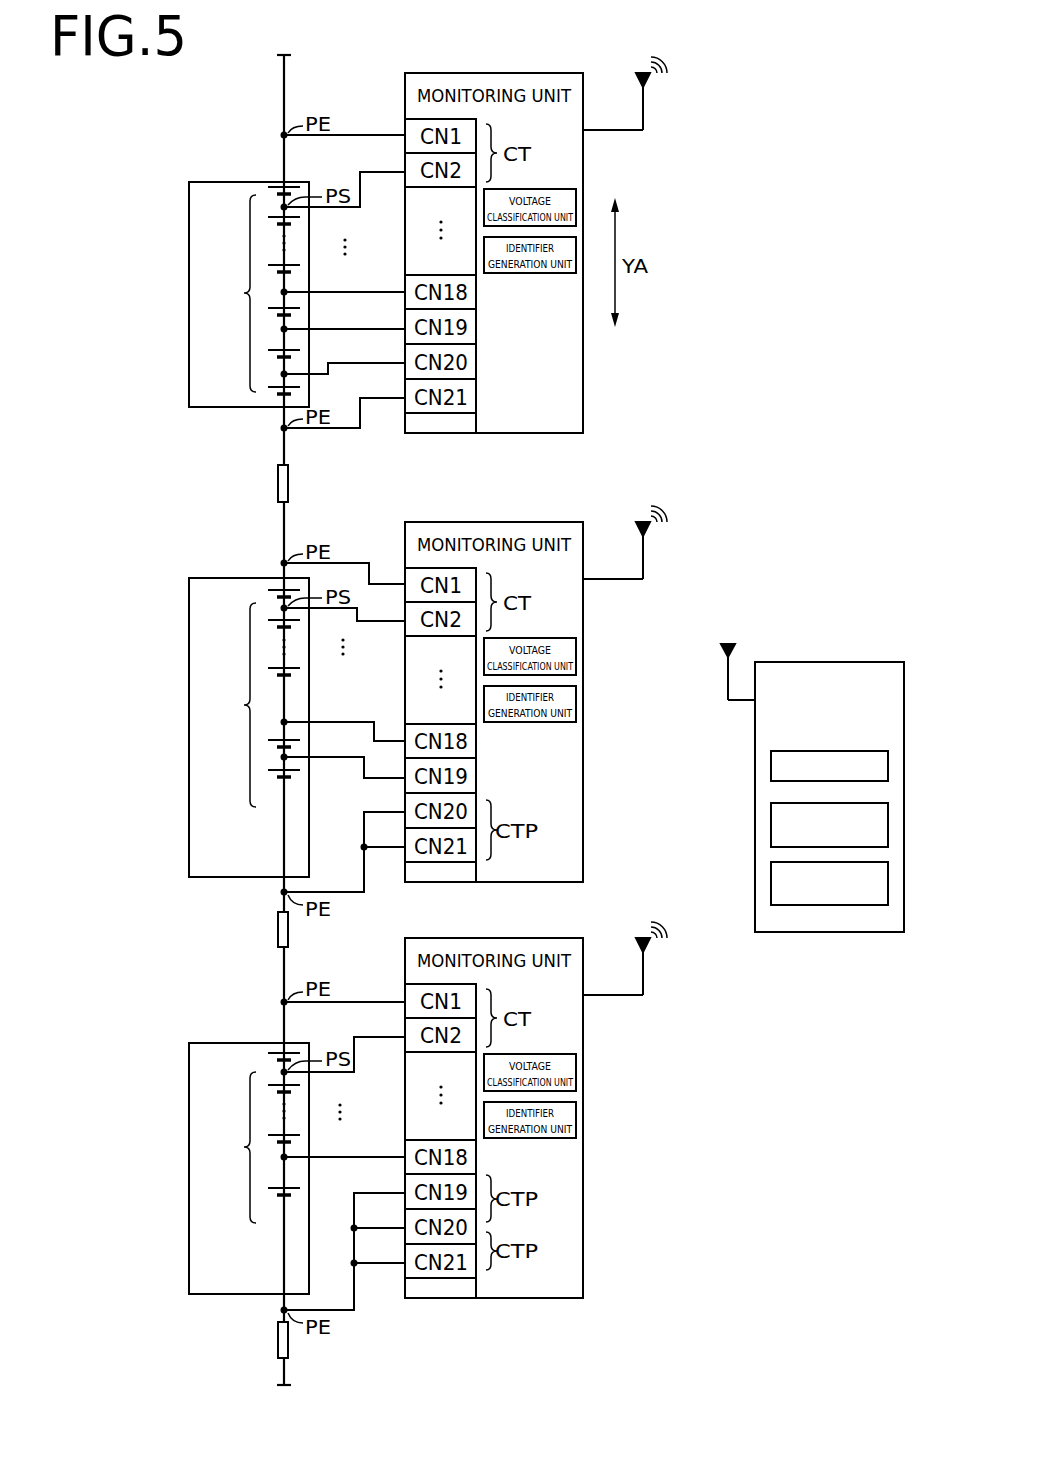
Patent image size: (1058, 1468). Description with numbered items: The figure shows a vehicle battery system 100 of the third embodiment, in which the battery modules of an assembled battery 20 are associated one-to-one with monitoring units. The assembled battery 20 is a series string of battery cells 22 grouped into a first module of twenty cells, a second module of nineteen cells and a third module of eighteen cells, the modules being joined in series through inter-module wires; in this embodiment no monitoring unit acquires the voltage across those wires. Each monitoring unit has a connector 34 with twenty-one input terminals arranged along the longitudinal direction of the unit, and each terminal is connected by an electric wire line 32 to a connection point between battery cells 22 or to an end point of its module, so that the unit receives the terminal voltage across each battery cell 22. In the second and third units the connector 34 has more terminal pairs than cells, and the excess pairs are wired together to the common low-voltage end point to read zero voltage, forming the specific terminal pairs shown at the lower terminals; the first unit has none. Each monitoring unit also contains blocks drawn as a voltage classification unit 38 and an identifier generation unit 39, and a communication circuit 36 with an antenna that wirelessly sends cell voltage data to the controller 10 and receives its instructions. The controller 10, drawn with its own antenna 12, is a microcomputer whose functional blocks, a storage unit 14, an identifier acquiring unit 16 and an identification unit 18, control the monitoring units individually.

The controller 10 is at (853, 778).
The antenna of controller 12 is at (726, 684).
The storage unit 14 is at (860, 749).
The identifier acquiring unit 16 is at (888, 823).
The identification unit 18 is at (888, 887).
The assembled battery 20 is at (307, 82).
The battery cell 22 is at (280, 188).
The electric wire line 32 is at (343, 135).
The connector 34 is at (478, 401).
The communication circuit 36 is at (645, 112).
The voltage classification unit 38 is at (562, 189).
The identifier generation unit 39 is at (548, 273).
The battery system 100 is at (855, 77).